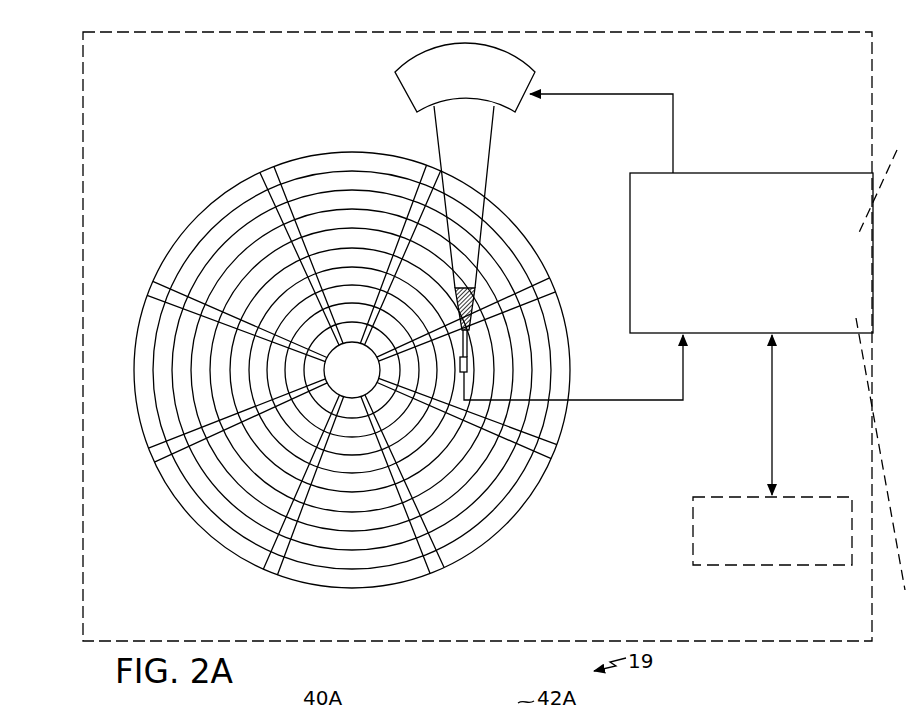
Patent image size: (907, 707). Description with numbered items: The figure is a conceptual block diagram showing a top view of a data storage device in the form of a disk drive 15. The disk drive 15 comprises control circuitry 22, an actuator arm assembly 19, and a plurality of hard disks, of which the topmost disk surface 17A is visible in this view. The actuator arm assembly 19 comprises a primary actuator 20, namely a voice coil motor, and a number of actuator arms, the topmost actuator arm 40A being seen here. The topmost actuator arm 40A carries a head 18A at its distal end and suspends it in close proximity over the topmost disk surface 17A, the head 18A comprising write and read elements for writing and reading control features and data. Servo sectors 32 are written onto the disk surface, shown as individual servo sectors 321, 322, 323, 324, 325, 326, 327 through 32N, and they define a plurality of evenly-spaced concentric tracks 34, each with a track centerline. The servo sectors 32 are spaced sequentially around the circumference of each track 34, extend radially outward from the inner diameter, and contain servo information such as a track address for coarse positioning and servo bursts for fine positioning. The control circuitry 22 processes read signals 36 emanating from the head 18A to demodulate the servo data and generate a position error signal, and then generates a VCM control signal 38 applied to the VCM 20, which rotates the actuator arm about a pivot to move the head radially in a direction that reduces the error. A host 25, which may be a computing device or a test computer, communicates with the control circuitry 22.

The disk drive 15 is at (804, 647).
The topmost disk surface 17A is at (358, 363).
The head 18A is at (471, 371).
The actuator arm assembly 19 is at (514, 211).
The primary actuator 20 is at (522, 104).
The control circuitry 22 is at (764, 261).
The host 25 is at (784, 556).
The servo sectors 32 is at (358, 373).
The servo sector 321 is at (268, 172).
The servo sector 322 is at (156, 294).
The servo sector 323 is at (158, 458).
The servo sector 324 is at (270, 578).
The servo sector 325 is at (441, 574).
The servo sector 326 is at (558, 446).
The servo sector 327 is at (551, 288).
The servo sector 32N is at (434, 170).
The tracks 34 is at (360, 178).
The read signals 36 is at (663, 403).
The VCM control signal 38 is at (674, 114).
The topmost actuator arm 40A is at (488, 172).